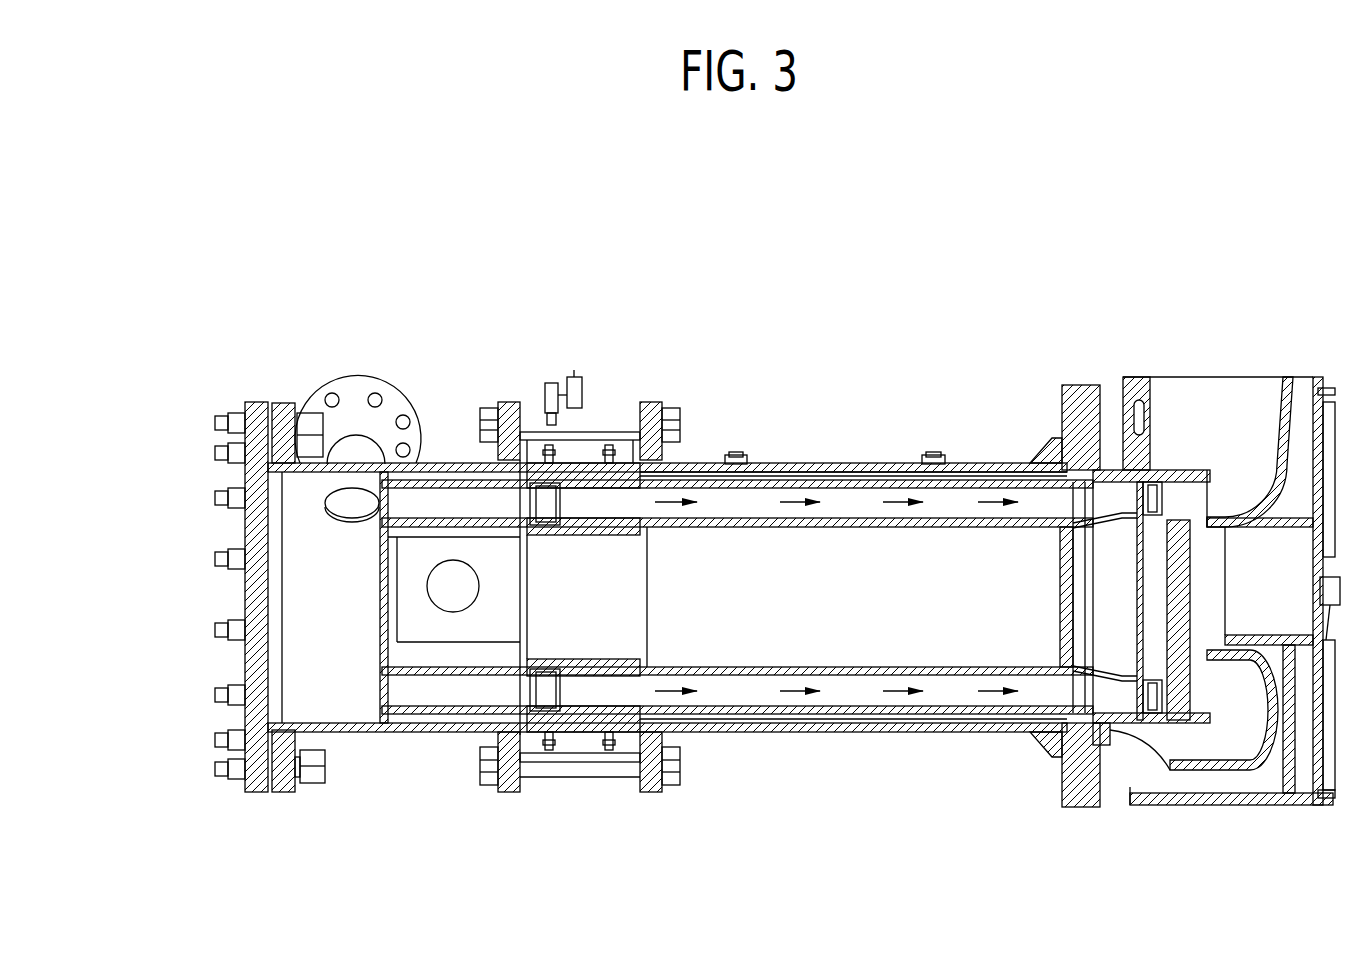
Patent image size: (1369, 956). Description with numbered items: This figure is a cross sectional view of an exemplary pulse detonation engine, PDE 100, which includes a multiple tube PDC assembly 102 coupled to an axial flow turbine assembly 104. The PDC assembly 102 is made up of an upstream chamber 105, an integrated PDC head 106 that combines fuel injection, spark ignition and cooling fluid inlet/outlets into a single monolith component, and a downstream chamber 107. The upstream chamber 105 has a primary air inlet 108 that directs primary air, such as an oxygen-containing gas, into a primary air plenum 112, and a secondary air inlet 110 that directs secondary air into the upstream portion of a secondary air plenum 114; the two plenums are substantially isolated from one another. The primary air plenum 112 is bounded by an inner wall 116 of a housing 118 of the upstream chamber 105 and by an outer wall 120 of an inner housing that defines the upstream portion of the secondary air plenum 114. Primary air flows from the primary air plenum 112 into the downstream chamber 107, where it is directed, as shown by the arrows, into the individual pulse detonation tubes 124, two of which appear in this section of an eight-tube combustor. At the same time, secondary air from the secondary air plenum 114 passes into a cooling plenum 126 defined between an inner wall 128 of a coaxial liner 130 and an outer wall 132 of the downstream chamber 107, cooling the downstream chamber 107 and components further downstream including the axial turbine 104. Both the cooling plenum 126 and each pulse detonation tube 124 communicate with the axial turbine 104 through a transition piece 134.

The pulse detonation engine 100 is at (125, 172).
The PDC assembly 102 is at (395, 226).
The axial flow turbine assembly 104 is at (1232, 357).
The upstream chamber 105 is at (255, 352).
The integrated PDC head 106 is at (483, 352).
The downstream chamber 107 is at (1060, 352).
The primary air inlet 108 is at (343, 503).
The secondary air inlet 110 is at (453, 612).
The primary air plenum 112 is at (297, 596).
The secondary air plenum 114 is at (403, 593).
The inner wall 116 is at (318, 723).
The housing 118 is at (367, 732).
The outer wall 120 is at (417, 545).
The pulse detonation tubes 124 is at (443, 497).
The cooling plenum 126 is at (766, 478).
The inner wall 128 is at (835, 475).
The coaxial liner 130 is at (815, 468).
The outer wall 132 is at (882, 478).
The transition piece 134 is at (1120, 680).